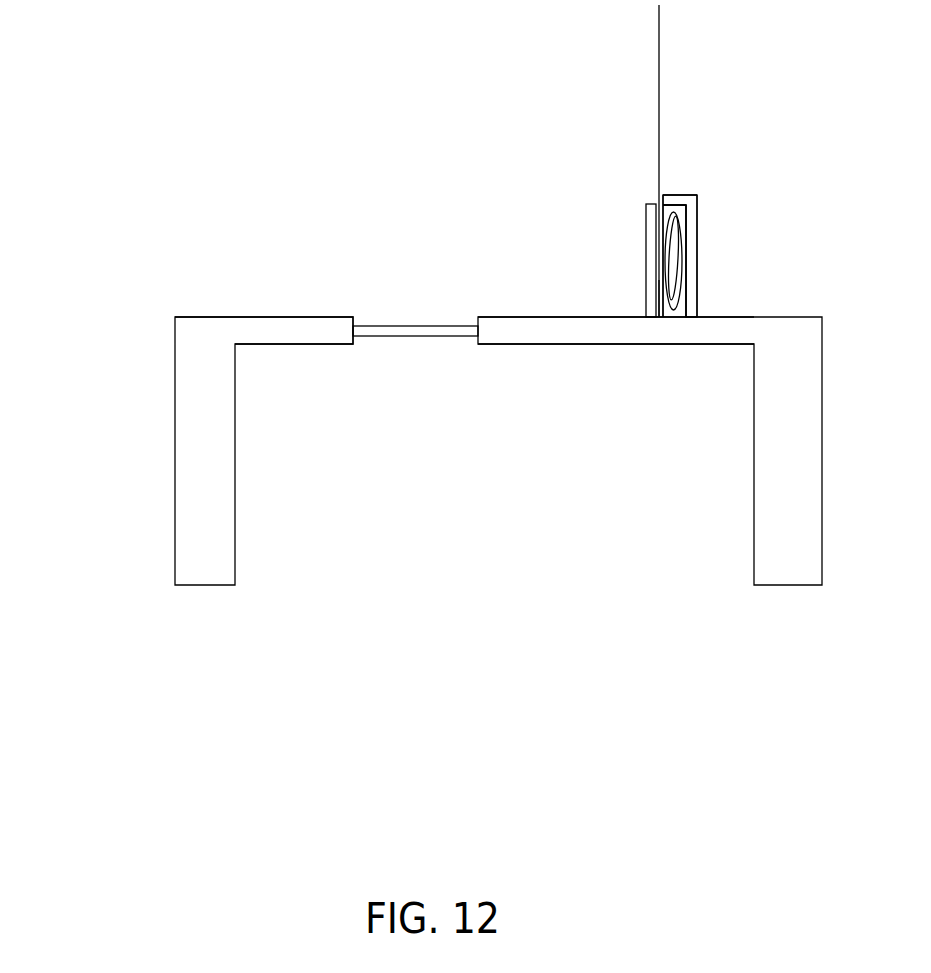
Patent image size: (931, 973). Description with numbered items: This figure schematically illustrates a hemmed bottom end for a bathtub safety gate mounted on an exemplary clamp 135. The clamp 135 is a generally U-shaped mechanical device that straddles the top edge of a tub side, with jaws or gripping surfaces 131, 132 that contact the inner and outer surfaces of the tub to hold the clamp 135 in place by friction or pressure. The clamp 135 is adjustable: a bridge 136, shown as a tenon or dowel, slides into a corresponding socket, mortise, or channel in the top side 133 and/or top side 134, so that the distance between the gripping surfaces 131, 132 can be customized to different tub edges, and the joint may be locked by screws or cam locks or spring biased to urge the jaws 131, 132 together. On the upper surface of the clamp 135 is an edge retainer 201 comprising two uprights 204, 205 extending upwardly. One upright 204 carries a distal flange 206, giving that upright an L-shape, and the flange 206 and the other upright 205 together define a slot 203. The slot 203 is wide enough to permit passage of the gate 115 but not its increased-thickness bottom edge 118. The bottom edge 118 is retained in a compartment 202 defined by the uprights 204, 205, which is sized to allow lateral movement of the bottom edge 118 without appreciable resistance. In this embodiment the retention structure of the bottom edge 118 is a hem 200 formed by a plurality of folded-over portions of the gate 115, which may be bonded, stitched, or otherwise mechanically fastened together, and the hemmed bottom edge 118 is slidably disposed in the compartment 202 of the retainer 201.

The gate 115 is at (659, 118).
The bottom edge 118 is at (668, 292).
The gripping surface 131 is at (173, 468).
The gripping surface 132 is at (754, 485).
The top side 133 is at (289, 345).
The top side 134 is at (523, 345).
The clamp 135 is at (165, 355).
The bridge 136 is at (407, 337).
The hem 200 is at (677, 227).
The holder 201 is at (697, 205).
The compartment 202 is at (678, 212).
The slot 203 is at (663, 195).
The upright 204 is at (697, 280).
The upright 205 is at (643, 253).
The flange 206 is at (685, 195).